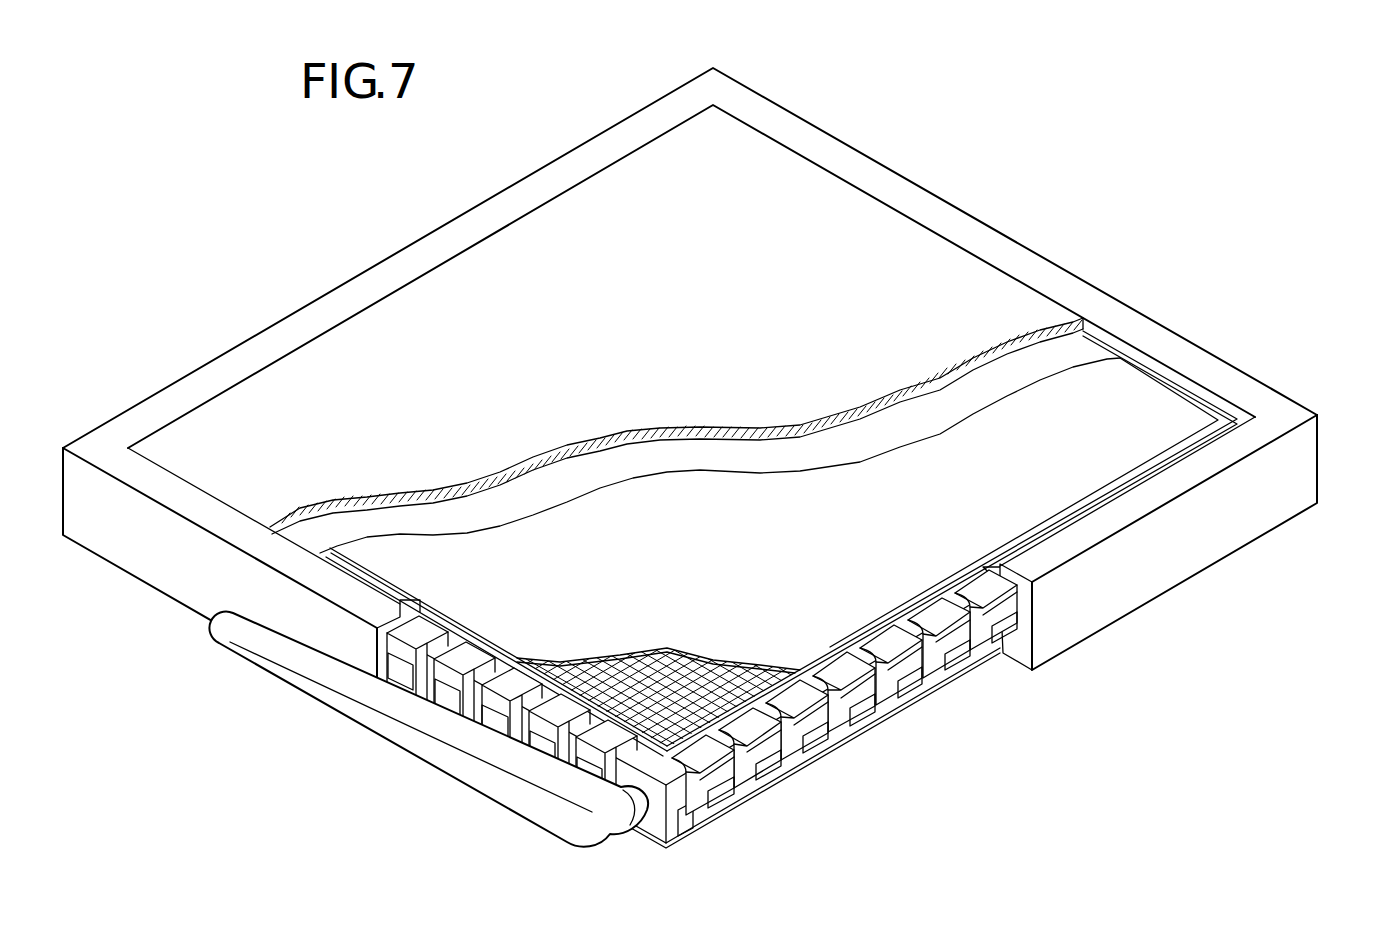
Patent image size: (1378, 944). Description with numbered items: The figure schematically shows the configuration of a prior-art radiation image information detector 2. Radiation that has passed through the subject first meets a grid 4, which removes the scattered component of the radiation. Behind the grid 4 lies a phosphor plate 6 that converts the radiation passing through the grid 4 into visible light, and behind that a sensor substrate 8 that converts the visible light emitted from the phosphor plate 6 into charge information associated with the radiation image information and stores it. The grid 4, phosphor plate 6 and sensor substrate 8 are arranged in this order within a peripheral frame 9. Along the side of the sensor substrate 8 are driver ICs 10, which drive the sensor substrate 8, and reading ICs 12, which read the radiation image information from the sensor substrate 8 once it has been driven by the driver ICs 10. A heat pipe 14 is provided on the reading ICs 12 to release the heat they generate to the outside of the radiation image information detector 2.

The radiation image information detector 2 is at (1062, 256).
The grid 4 is at (548, 247).
The phosphor plate 6 is at (1133, 397).
The sensor substrate 8 is at (627, 677).
The peripheral frame 9 is at (1290, 472).
The driver ICs 10 is at (452, 703).
The reading ICs 12 is at (817, 733).
The heat pipe 14 is at (608, 816).